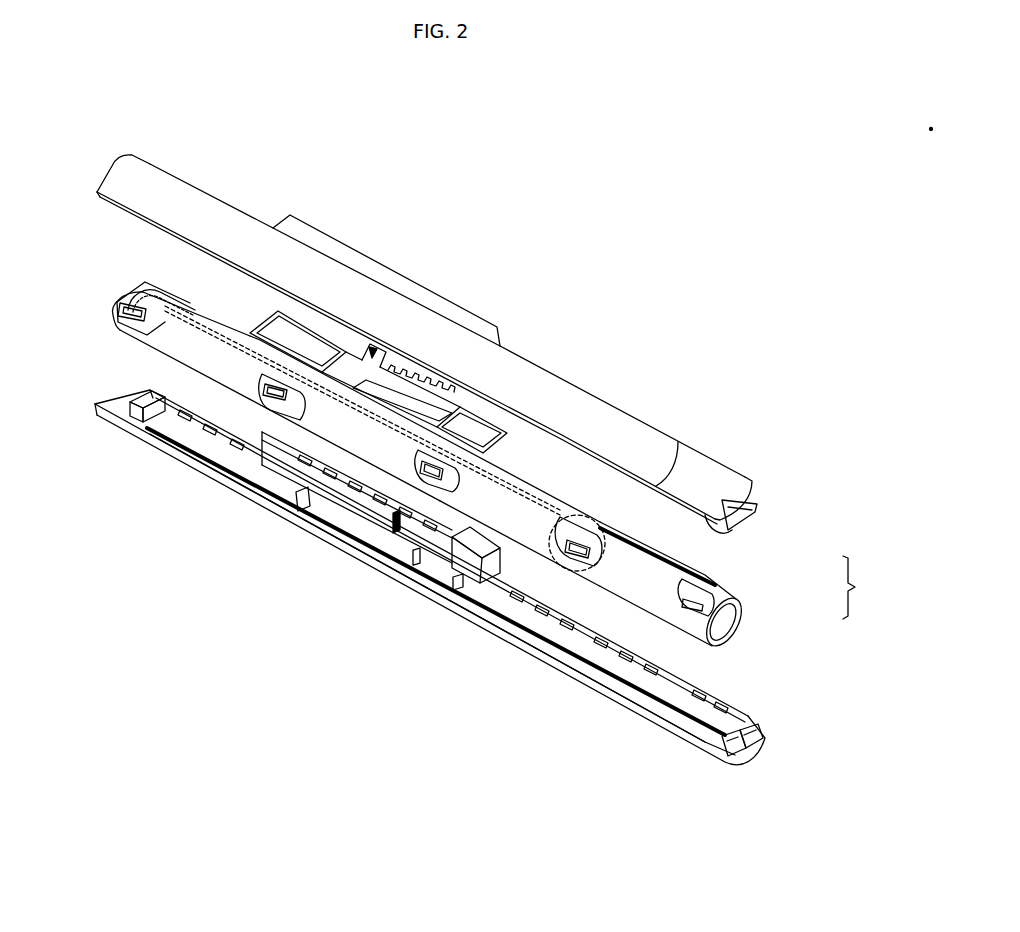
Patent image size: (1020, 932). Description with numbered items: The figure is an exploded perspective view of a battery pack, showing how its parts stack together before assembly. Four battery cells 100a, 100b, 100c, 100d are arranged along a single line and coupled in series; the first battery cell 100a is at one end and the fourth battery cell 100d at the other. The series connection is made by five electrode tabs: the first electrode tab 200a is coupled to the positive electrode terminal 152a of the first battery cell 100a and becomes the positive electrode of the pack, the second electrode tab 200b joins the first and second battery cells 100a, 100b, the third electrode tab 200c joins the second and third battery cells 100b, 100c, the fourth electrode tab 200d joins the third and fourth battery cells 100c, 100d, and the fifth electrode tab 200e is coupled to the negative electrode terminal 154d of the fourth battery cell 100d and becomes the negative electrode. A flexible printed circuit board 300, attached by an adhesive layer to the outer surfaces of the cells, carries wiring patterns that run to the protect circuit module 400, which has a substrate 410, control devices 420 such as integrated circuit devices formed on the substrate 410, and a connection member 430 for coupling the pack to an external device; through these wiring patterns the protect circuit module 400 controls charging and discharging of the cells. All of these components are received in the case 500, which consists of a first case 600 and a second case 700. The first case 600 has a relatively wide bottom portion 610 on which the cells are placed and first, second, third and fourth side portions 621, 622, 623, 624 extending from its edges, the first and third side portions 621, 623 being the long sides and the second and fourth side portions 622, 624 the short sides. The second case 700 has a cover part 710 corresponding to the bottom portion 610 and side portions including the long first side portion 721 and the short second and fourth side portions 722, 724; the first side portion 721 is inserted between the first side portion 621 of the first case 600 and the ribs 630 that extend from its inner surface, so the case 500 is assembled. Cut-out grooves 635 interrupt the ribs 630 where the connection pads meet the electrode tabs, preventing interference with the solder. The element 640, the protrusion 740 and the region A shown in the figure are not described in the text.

The first battery cell 100a is at (688, 604).
The second battery cell 100b is at (520, 511).
The third battery cell 100c is at (345, 418).
The fourth battery cell 100d is at (181, 345).
The positive electrode terminal 152a is at (732, 640).
The negative electrode terminal 154d is at (116, 315).
The first electrode tab 200a is at (706, 590).
The second electrode tab 200b is at (580, 530).
The third electrode tab 200c is at (452, 465).
The fourth electrode tab 200d is at (262, 378).
The fifth electrode tab 200e is at (117, 291).
The flexible printed circuit board 300 is at (553, 497).
The protect circuit module 400 is at (394, 320).
The substrate 410 is at (352, 355).
The control devices 420 is at (287, 330).
The connection member 430 is at (432, 397).
The case 500 is at (869, 587).
The first case 600 is at (465, 580).
The bottom portion 610 is at (647, 690).
The first side portion 621 is at (546, 645).
The second side portion 622 is at (745, 752).
The third side portion 623 is at (727, 718).
The fourth side portion 624 is at (133, 402).
The ribs 630 is at (347, 540).
The cut-out grooves 635 is at (432, 572).
The support rail 640 is at (315, 478).
The second case 700 is at (439, 349).
The cover part 710 is at (590, 408).
The first side portion 721 is at (662, 478).
The second side portion 722 is at (752, 482).
The fourth side portion 724 is at (112, 162).
The cover protrusion 740 is at (300, 228).
The detail region A is at (560, 572).